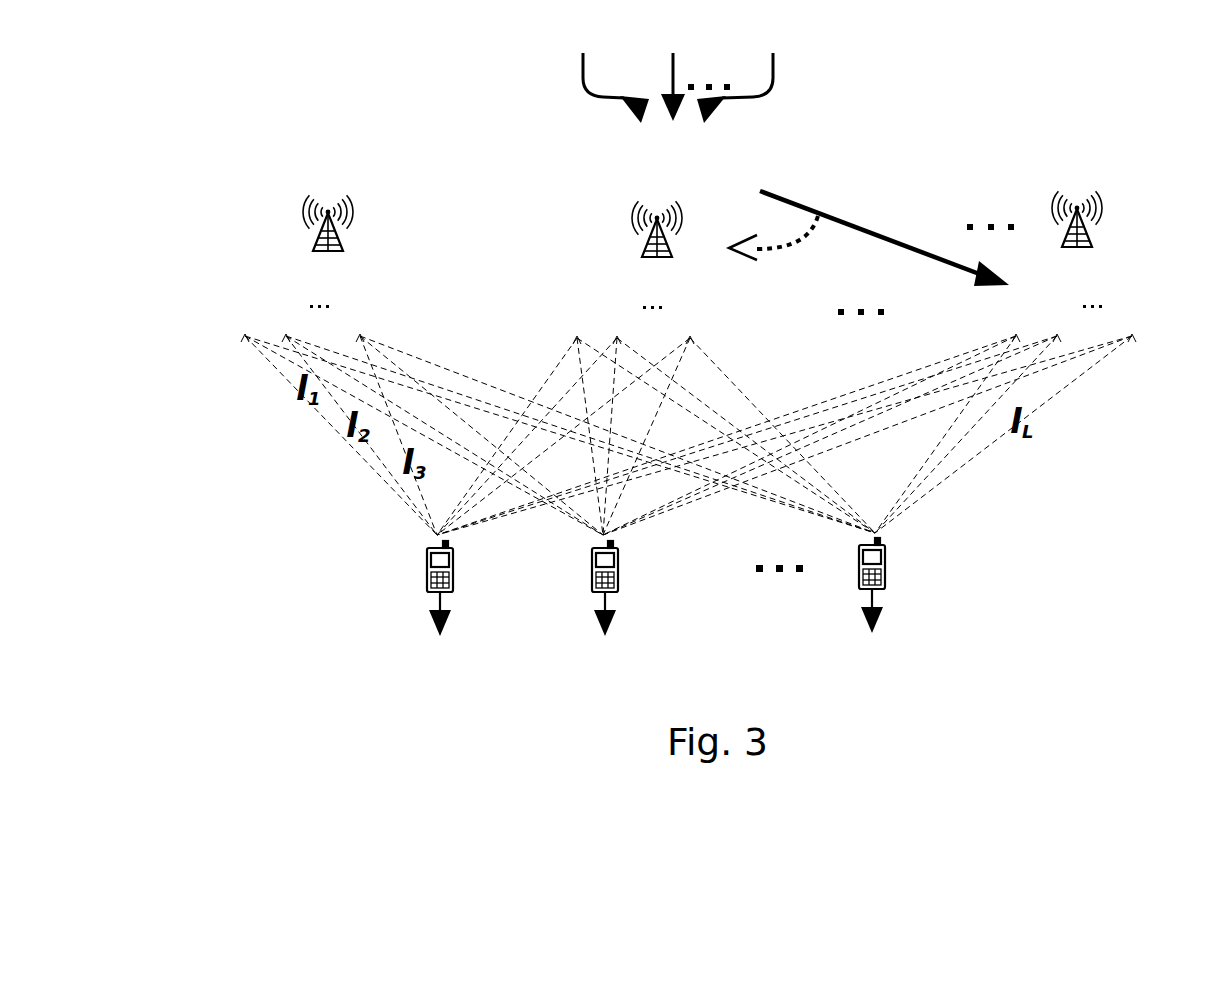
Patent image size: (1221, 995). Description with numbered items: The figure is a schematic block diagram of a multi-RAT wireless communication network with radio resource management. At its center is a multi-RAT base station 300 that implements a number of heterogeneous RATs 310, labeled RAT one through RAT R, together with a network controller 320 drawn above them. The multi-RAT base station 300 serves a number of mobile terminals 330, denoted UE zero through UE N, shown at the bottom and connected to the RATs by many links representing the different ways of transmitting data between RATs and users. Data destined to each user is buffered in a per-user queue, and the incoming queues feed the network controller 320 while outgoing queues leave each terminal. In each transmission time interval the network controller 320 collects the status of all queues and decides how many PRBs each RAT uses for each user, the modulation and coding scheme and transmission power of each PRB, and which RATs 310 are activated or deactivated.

The multi-RAT base station 300 is at (212, 177).
The heterogeneous RATs 310 is at (307, 237).
The network controller 320 is at (767, 158).
The mobile terminals 330 is at (420, 570).